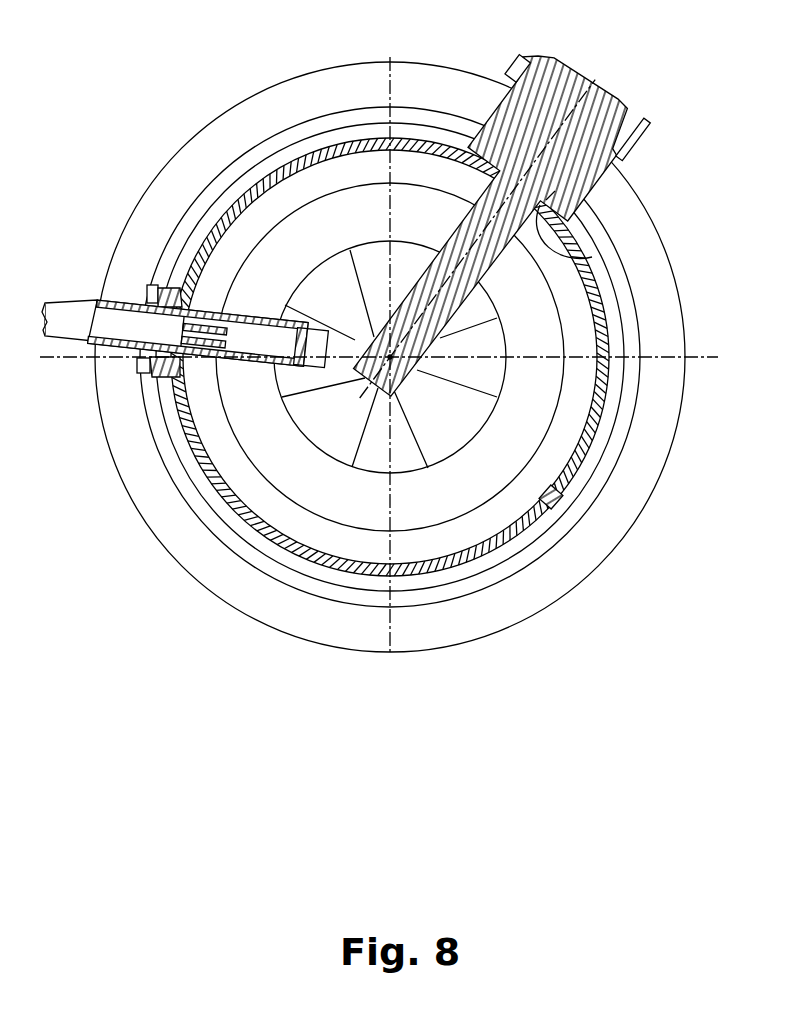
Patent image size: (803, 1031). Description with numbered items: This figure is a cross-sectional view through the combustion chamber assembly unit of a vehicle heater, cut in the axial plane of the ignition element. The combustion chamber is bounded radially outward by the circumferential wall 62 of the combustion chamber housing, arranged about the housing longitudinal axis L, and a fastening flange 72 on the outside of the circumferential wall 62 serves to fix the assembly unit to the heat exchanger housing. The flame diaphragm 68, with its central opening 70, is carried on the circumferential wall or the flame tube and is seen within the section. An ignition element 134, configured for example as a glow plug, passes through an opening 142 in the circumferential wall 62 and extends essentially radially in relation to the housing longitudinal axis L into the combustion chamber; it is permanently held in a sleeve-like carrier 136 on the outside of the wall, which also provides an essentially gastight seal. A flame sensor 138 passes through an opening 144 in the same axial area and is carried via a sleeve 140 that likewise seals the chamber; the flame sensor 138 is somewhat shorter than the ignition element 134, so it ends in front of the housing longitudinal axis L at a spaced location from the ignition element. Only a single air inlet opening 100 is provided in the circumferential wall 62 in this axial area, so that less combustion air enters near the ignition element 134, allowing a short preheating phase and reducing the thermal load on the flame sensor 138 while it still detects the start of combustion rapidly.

The circumferential wall 62 is at (335, 573).
The flame diaphragm 68 is at (473, 480).
The opening 70 is at (452, 447).
The fastening flange 72 is at (260, 140).
The air inlet opening 100 is at (559, 503).
The ignition element 134 is at (463, 200).
The sleeve-like carrier 136 is at (590, 200).
The flame sensor 138 is at (250, 345).
The sleeve 140 is at (150, 373).
The opening 142 is at (593, 257).
The opening 144 is at (205, 287).
The housing longitudinal axis L is at (405, 363).